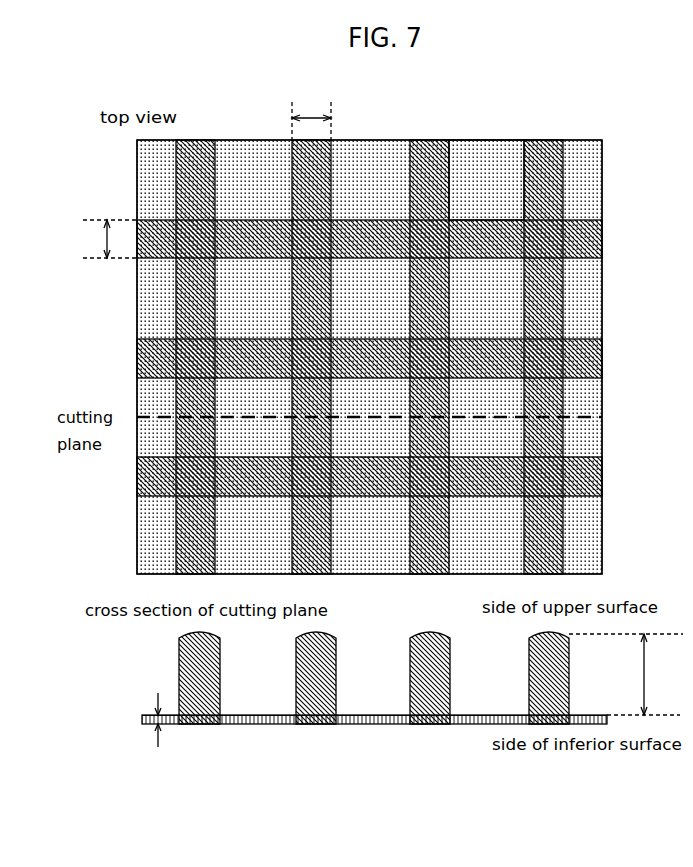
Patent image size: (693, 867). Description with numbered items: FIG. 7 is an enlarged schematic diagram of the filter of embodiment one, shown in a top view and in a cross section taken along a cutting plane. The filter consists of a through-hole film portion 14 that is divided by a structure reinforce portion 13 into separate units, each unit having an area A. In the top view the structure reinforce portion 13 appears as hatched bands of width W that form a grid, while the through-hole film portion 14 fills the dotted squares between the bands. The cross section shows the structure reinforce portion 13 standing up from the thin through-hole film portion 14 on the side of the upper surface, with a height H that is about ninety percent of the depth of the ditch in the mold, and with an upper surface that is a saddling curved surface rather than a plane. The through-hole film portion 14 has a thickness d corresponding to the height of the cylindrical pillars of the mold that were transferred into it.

The structure reinforce portion 13 is at (563, 190).
The through-hole film portion 14 is at (510, 305).
The area of a unit A is at (487, 170).
The width of the structure reinforce portion W is at (203, 177).
The height of the pillars d is at (139, 720).
The height of the structure reinforce portion H is at (626, 674).